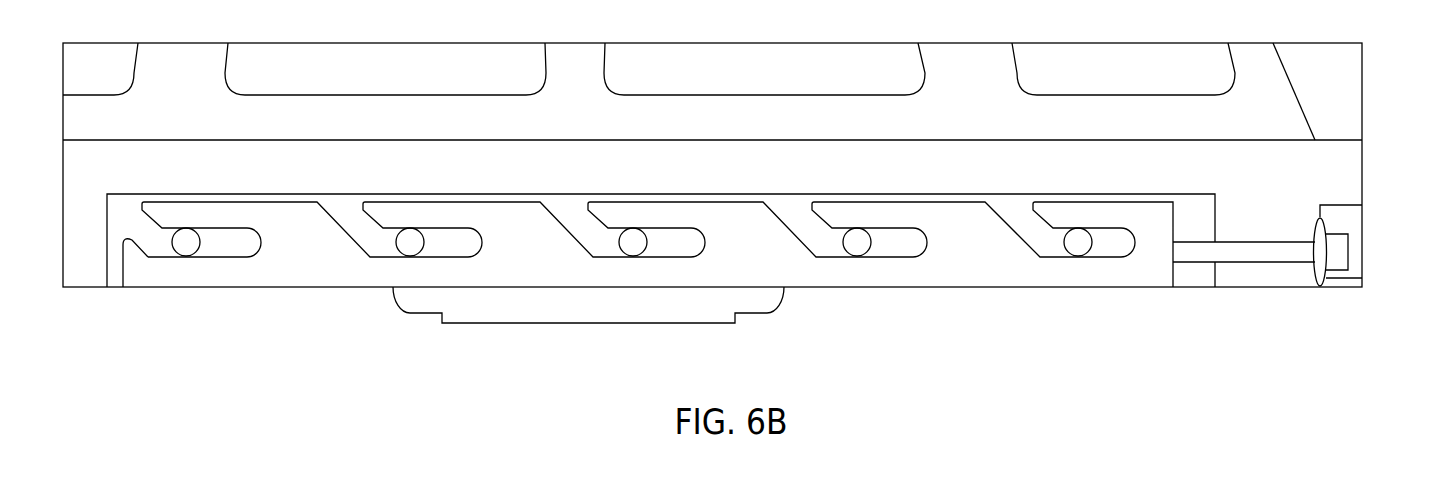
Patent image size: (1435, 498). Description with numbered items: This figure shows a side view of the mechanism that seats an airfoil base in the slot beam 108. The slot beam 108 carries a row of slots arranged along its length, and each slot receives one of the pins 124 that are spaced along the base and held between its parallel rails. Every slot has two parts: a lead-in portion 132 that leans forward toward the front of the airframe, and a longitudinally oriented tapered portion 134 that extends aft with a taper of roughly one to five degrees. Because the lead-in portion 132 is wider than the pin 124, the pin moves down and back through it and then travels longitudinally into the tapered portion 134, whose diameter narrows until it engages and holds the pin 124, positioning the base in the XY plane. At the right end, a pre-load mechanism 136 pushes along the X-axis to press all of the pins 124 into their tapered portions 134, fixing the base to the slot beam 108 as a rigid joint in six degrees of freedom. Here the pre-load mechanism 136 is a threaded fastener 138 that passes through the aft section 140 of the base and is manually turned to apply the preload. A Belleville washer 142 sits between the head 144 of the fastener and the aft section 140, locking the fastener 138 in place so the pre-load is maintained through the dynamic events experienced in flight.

The slot beam 108 is at (293, 258).
The pins 124 is at (408, 244).
The lead-in portion 132 is at (807, 225).
The tapered portion 134 is at (890, 242).
The pre-load mechanism 136 is at (1346, 290).
The threaded fastener 138 is at (1253, 251).
The aft section 140 is at (1260, 220).
The Belleville washer 142 is at (1320, 250).
The head 144 is at (1348, 249).